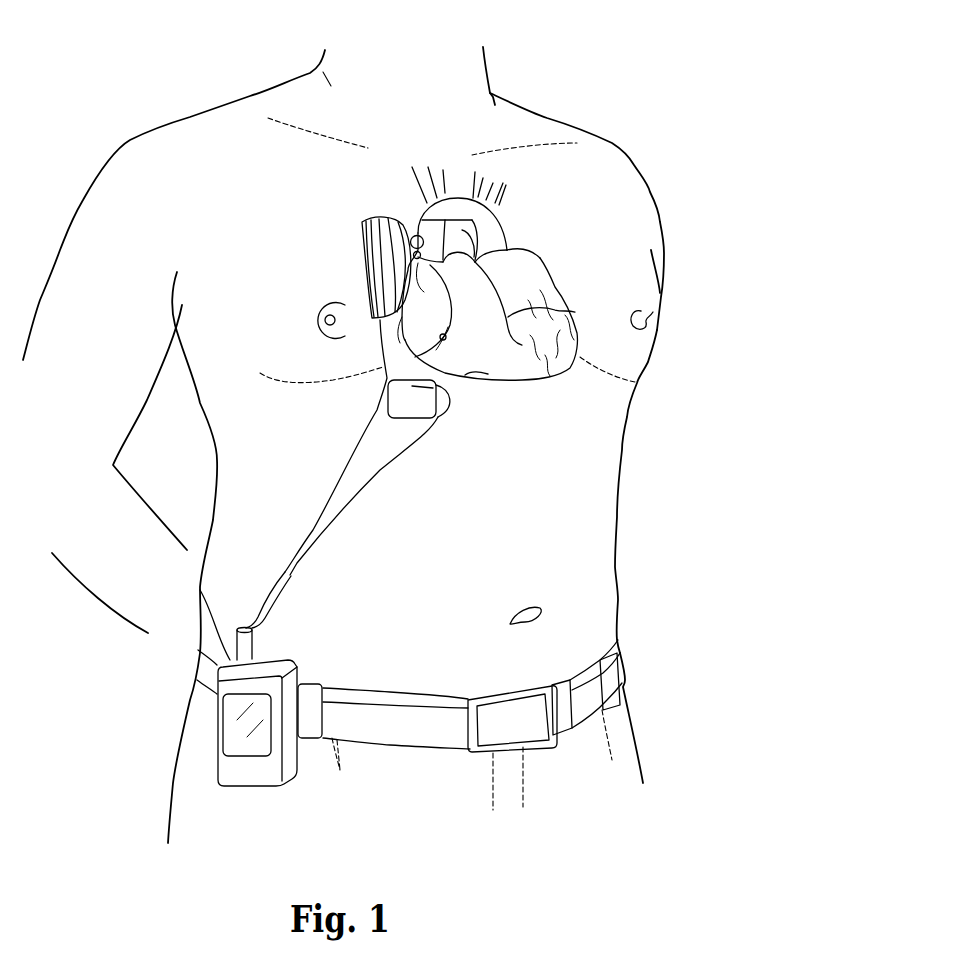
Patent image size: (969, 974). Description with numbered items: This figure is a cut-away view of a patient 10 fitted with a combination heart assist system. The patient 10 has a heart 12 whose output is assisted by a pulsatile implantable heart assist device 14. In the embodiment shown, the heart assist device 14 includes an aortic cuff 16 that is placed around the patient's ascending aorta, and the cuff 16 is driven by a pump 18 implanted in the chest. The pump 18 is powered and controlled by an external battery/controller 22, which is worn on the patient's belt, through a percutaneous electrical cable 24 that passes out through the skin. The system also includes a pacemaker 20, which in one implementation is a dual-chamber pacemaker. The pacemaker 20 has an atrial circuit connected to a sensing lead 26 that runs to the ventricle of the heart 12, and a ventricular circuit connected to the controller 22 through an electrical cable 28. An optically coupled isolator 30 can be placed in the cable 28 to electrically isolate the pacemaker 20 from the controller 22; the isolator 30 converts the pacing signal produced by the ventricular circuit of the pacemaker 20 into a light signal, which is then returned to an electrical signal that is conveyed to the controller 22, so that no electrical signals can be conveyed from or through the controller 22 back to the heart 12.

The patient 10 is at (582, 85).
The heart 12 is at (443, 289).
The pulsatile implantable heart assist device 14 is at (334, 247).
The aortic cuff 16 is at (410, 227).
The pump 18 is at (363, 243).
The pacemaker 20 is at (430, 410).
The external battery/controller 22 is at (290, 667).
The percutaneous electrical cable 24 is at (355, 443).
The sensing lead 26 is at (480, 376).
The electrical cable 28 is at (388, 458).
The optically coupled isolator 30 is at (200, 590).